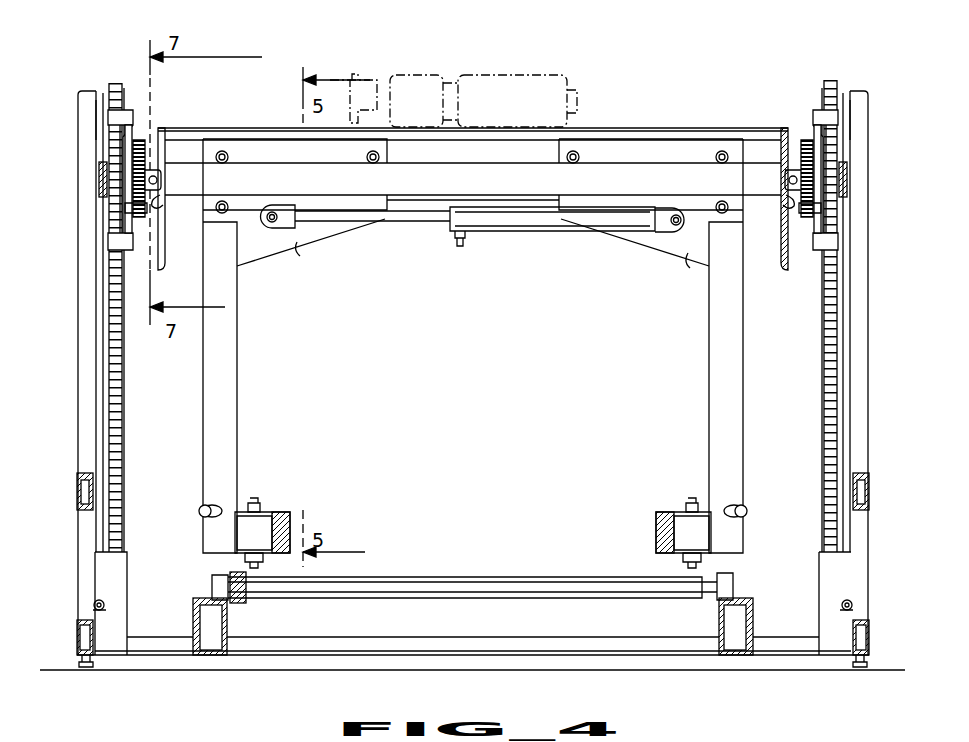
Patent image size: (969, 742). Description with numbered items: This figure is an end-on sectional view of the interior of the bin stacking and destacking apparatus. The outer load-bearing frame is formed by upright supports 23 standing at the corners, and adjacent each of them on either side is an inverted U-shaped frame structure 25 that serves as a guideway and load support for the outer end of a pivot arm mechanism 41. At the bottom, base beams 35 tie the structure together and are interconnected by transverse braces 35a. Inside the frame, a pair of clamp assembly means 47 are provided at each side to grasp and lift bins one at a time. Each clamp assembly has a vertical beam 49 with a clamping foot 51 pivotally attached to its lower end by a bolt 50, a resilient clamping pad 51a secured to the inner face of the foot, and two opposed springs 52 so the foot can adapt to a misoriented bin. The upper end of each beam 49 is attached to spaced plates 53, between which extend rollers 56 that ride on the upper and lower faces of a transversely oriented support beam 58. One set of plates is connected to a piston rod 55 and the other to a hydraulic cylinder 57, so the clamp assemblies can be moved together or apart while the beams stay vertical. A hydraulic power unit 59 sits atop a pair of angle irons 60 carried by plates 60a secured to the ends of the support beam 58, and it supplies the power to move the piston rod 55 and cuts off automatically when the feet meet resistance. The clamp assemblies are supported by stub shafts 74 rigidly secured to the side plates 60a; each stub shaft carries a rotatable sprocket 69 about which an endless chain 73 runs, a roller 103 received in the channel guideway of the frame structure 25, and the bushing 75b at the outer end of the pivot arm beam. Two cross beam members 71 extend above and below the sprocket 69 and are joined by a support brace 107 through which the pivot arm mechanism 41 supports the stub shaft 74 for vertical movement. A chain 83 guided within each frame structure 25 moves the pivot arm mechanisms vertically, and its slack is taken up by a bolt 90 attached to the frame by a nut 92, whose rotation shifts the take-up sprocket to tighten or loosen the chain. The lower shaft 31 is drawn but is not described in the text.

The upright support 23 is at (80, 262).
The inverted U-shaped frame structure 25 is at (104, 355).
The lower drive shaft 31 is at (210, 581).
The base beam 35 is at (77, 638).
The transverse brace 35a is at (560, 637).
The pivot arm mechanism 41 is at (92, 122).
The clamp assembly means 47 is at (473, 346).
The vertical beam 49 is at (237, 423).
The bolt 50 is at (254, 503).
The clamping foot 51 is at (473, 510).
The resilient clamping pad 51a is at (290, 512).
The spring 52 is at (202, 511).
The spaced plate 53 is at (473, 251).
The piston rod 55 is at (357, 222).
The roller 56 is at (232, 201).
The hydraulic cylinder 57 is at (530, 231).
The support beam 58 is at (500, 189).
The hydraulic power unit 59 is at (523, 72).
The angle iron 60 is at (605, 128).
The plate 60a is at (165, 271).
The rotatable sprocket 69 is at (136, 162).
The cross beam member 71 is at (137, 116).
The endless chain 73 is at (126, 208).
The stub shaft 74 is at (163, 181).
The bushing 75b is at (473, 214).
The chain 83 is at (108, 287).
The bolt 90 is at (105, 606).
The nut 92 is at (105, 610).
The roller 103 is at (100, 181).
The support brace 107 is at (127, 145).